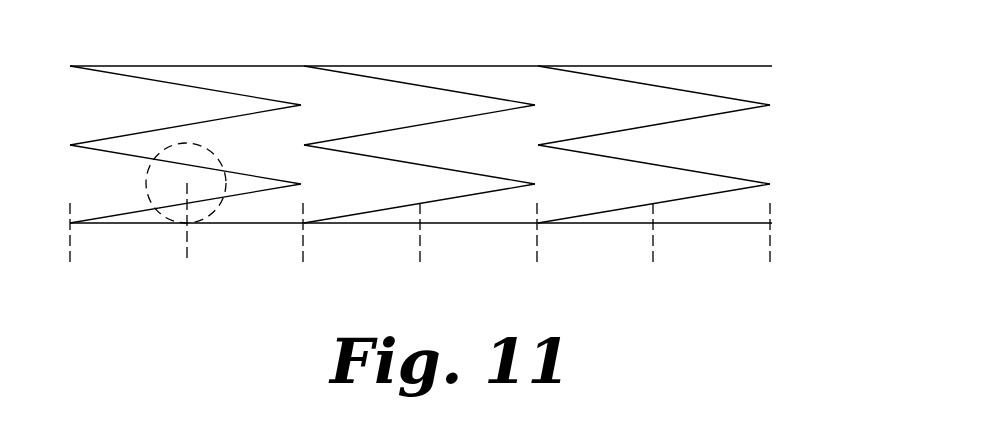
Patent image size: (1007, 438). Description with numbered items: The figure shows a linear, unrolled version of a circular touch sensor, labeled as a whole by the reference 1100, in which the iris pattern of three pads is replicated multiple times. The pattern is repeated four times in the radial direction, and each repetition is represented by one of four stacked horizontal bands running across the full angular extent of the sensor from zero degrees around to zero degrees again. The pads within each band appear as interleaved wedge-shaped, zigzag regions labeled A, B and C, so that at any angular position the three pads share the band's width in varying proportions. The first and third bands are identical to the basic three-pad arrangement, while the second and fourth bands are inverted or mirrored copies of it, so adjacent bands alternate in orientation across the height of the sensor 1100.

The pattern of optical elements over 360 degrees 1100 is at (727, 36).